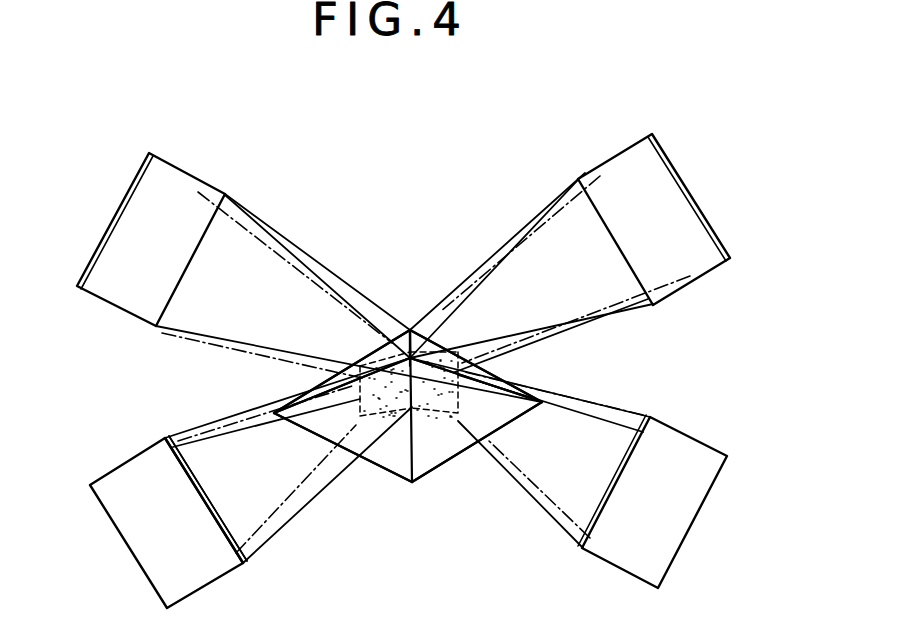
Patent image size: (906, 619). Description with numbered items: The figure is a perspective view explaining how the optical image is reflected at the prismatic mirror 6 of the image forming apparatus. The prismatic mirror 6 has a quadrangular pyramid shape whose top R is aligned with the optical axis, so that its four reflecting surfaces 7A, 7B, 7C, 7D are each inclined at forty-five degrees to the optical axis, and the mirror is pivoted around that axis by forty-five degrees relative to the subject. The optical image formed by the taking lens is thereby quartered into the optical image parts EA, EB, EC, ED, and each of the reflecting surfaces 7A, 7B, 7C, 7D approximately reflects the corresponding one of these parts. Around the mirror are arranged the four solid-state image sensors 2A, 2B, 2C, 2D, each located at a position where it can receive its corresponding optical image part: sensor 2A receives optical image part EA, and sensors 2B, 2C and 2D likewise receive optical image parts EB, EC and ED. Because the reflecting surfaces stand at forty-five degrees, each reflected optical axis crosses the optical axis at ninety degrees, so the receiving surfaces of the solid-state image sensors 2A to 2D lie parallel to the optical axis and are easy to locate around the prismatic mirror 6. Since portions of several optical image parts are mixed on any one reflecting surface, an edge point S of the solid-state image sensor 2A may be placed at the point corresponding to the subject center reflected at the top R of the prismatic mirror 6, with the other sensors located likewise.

The solid-state image sensor 2A is at (148, 533).
The solid-state image sensor 2B is at (673, 514).
The solid-state image sensor 2C is at (140, 216).
The solid-state image sensor 2D is at (675, 198).
The prismatic mirror 6 is at (448, 425).
The reflecting surface 7A is at (326, 420).
The reflecting surface 7B is at (495, 415).
The reflecting surface 7C is at (406, 330).
The reflecting surface 7D is at (493, 368).
The top of the prismatic mirror R is at (410, 353).
The edge point of the solid-state image sensor S is at (165, 438).
The optical image part EA is at (378, 397).
The optical image part EB is at (443, 402).
The optical image part EC is at (358, 364).
The optical image part ED is at (436, 358).